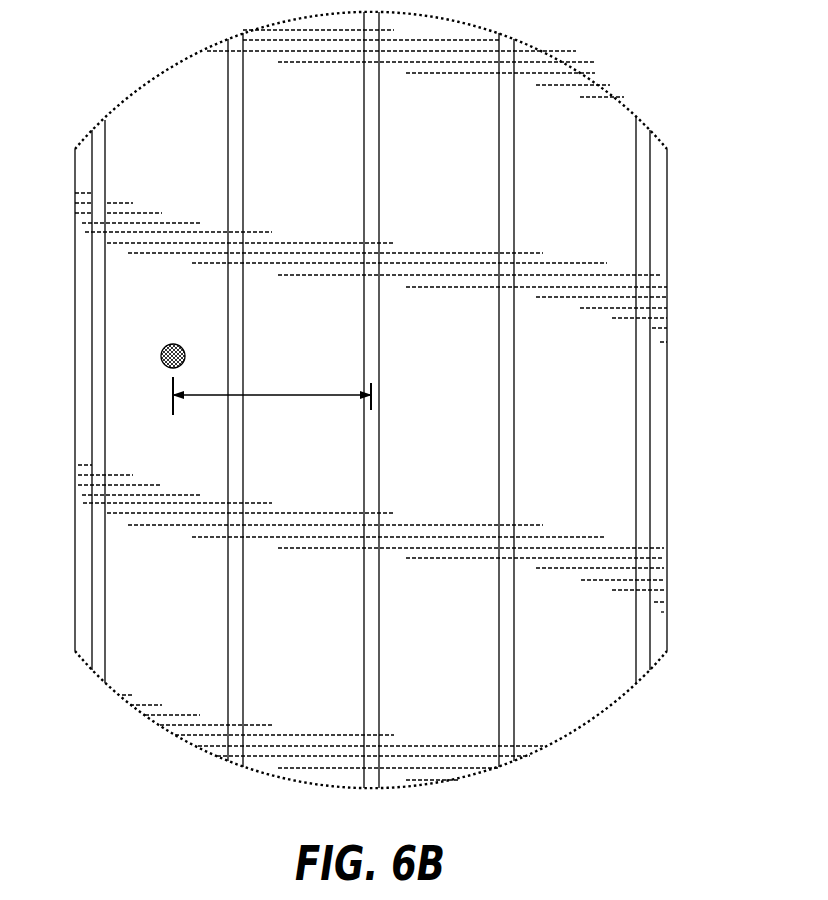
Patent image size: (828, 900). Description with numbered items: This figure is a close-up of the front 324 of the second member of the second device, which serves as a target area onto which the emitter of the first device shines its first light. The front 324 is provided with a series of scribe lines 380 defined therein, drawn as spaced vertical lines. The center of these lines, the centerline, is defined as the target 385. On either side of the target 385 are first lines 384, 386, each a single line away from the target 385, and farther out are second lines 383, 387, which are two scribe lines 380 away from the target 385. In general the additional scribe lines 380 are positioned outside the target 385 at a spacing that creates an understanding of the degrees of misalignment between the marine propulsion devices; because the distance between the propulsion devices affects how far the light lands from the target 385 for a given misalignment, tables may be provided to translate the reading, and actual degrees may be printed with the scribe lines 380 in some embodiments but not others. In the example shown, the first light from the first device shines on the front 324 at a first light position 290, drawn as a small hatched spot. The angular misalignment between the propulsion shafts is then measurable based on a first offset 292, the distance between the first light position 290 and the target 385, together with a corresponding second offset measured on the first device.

The front 324 is at (371, 400).
The scribe lines 380 is at (337, 400).
The second line 383 is at (107, 595).
The first line 384 is at (243, 653).
The target 385 is at (379, 658).
The first line 386 is at (516, 635).
The second line 387 is at (638, 487).
The first light position 290 is at (178, 330).
The first offset 292 is at (268, 397).